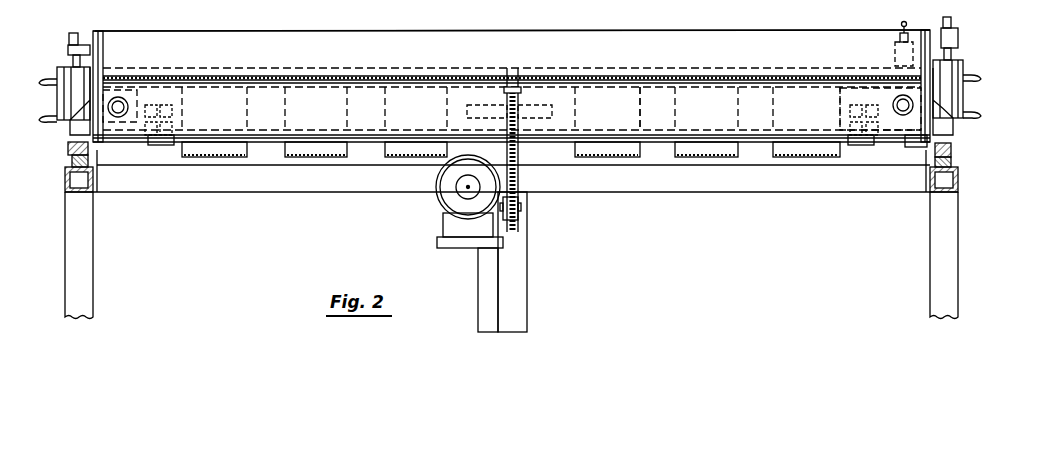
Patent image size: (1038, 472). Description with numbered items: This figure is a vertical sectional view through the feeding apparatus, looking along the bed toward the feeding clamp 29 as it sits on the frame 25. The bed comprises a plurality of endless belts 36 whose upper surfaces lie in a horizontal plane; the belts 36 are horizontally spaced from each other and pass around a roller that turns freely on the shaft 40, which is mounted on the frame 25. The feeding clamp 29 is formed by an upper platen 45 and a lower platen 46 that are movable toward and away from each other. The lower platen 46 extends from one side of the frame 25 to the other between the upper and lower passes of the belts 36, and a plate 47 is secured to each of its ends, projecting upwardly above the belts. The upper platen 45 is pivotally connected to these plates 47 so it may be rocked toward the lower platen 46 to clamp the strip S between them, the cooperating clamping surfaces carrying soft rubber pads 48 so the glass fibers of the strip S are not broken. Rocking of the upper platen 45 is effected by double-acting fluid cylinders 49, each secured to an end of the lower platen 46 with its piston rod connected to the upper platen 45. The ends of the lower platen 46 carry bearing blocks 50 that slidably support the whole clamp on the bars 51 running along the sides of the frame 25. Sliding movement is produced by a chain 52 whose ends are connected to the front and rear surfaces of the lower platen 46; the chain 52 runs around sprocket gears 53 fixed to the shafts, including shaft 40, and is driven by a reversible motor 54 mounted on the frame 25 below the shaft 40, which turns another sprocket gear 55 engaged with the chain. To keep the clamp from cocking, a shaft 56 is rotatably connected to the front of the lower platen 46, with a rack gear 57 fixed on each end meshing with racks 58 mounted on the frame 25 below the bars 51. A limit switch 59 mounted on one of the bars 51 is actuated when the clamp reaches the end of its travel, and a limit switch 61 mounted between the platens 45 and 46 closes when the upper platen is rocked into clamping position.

The frame 25 is at (348, 193).
The feeding clamp 29 is at (364, 29).
The endless belts 36 is at (200, 83).
The shaft 40 is at (540, 102).
The upper platen 45 is at (435, 38).
The lower platen 46 is at (645, 124).
The plate 47 is at (97, 90).
The soft rubber pads 48 is at (393, 85).
The double-acting fluid cylinders 49 is at (62, 100).
The bearing blocks 50 is at (137, 122).
The bars 51 is at (122, 117).
The chain 52 is at (513, 83).
The sprocket gears 53 is at (503, 100).
The reversible motor 54 is at (438, 197).
The sprocket gear 55 is at (516, 232).
The shaft 56 is at (690, 144).
The rack gear 57 is at (70, 151).
The racks 58 is at (72, 160).
The limit switch 59 is at (916, 136).
The limit switch 61 is at (895, 47).
The strip S is at (497, 72).